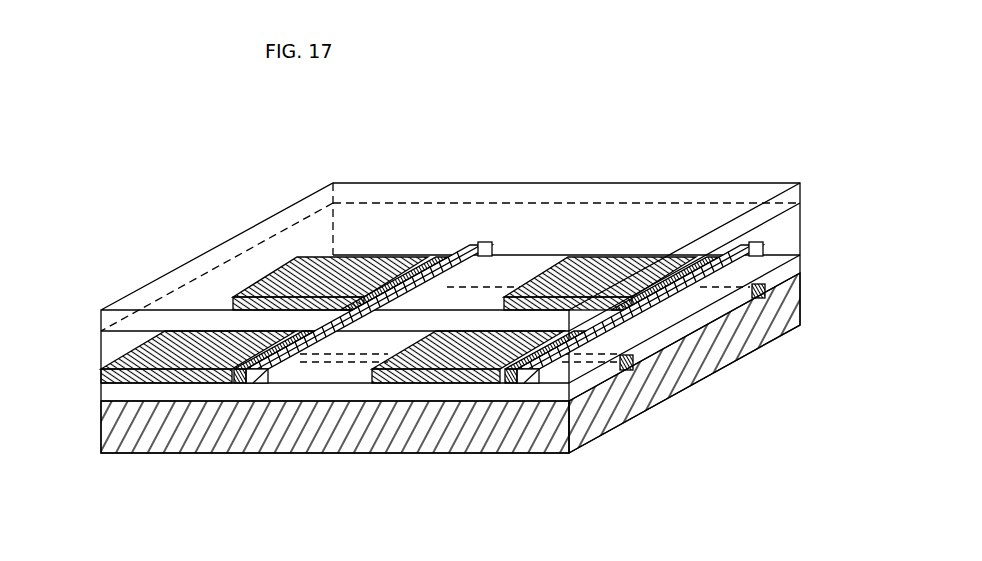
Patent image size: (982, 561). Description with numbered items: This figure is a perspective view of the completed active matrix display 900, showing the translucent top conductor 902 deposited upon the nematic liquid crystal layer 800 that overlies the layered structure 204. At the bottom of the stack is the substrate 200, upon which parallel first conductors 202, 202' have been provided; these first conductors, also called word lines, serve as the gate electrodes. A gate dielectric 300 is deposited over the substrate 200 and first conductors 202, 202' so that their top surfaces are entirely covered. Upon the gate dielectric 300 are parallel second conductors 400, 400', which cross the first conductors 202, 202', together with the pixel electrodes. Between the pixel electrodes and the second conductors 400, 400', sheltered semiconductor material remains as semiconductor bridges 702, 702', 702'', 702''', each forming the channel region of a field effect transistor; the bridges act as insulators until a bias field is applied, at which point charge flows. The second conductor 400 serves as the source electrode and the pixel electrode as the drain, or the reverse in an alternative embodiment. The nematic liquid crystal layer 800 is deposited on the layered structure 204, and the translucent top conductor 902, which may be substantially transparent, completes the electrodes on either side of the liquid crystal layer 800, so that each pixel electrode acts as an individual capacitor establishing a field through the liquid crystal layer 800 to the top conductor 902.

The active matrix display 900 is at (161, 151).
The translucent top conductor 902 is at (360, 196).
The nematic liquid crystal layer 800 is at (113, 350).
The layered structure 204 is at (89, 329).
The gate dielectric 300 is at (790, 273).
The substrate 200 is at (543, 447).
The first conductor 202 is at (488, 421).
The first conductor 202' is at (619, 351).
The second conductor 400 is at (640, 250).
The second conductor 400' is at (370, 249).
The semiconductor bridge 702 is at (257, 414).
The semiconductor bridge 702' is at (394, 224).
The semiconductor bridge 702'' is at (523, 416).
The semiconductor bridge 702''' is at (665, 221).